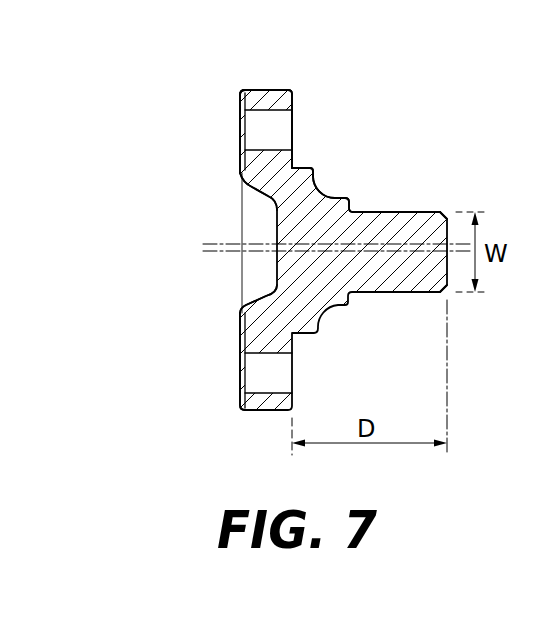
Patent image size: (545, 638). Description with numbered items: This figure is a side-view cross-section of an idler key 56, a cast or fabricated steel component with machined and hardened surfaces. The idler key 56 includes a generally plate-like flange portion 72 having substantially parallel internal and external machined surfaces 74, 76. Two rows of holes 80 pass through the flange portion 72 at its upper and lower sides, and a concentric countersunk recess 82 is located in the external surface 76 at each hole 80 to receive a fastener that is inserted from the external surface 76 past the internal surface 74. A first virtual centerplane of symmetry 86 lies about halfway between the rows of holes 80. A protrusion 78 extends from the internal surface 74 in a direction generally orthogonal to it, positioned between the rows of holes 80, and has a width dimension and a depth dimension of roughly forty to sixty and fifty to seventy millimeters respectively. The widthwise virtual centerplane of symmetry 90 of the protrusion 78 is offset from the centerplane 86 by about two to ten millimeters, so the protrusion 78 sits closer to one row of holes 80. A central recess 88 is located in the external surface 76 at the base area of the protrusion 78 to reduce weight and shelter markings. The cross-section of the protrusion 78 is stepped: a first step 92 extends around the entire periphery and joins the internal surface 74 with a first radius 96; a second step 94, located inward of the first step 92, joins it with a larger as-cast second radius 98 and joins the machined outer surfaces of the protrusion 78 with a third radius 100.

The idler key 56 is at (457, 190).
The flange portion 72 is at (268, 89).
The internal surface 74 is at (292, 90).
The concentric countersunk recess 82 is at (240, 93).
The holes 80 is at (262, 124).
The external surface 76 is at (240, 170).
The first virtual centerplane of symmetry 86 is at (242, 230).
The widthwise virtual centerplane of symmetry 90 is at (205, 247).
The central recess 88 is at (257, 292).
The first radius 96 is at (314, 178).
The first step 92 is at (326, 192).
The second radius 98 is at (340, 188).
The second step 94 is at (350, 200).
The third radius 100 is at (352, 211).
The protrusion 78 is at (442, 291).